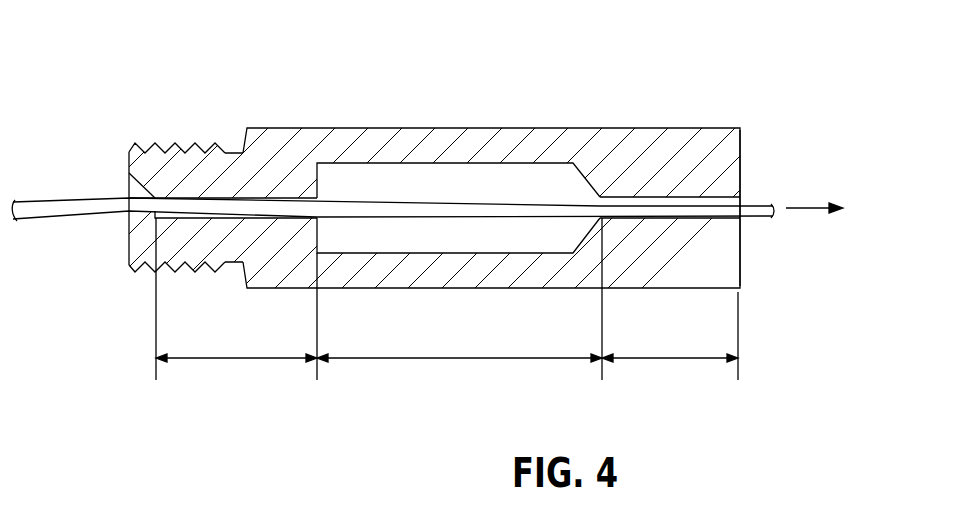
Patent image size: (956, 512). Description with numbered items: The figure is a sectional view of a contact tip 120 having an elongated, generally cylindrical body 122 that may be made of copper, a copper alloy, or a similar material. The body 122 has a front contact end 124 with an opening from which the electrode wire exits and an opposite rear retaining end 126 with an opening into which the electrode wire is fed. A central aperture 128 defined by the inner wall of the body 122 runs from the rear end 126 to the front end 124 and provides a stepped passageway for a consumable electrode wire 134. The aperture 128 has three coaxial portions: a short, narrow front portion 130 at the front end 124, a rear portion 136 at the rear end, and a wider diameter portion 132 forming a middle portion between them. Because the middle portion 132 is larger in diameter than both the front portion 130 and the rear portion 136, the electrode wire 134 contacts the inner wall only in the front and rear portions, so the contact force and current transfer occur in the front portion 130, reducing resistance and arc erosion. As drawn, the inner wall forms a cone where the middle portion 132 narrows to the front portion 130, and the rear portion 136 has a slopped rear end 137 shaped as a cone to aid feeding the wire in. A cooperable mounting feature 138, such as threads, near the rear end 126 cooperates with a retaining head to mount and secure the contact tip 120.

The contact tip 120 is at (632, 91).
The body 122 is at (283, 128).
The front contact end 124 is at (740, 148).
The rear retaining end 126 is at (129, 254).
The central aperture 128 is at (420, 250).
The front portion 130 is at (660, 360).
The wider diameter portion 132 is at (372, 360).
The electrode wire 134 is at (30, 222).
The rear portion 136 is at (255, 360).
The slopped rear end 137 is at (129, 192).
The cooperable mounting feature 138 is at (163, 142).